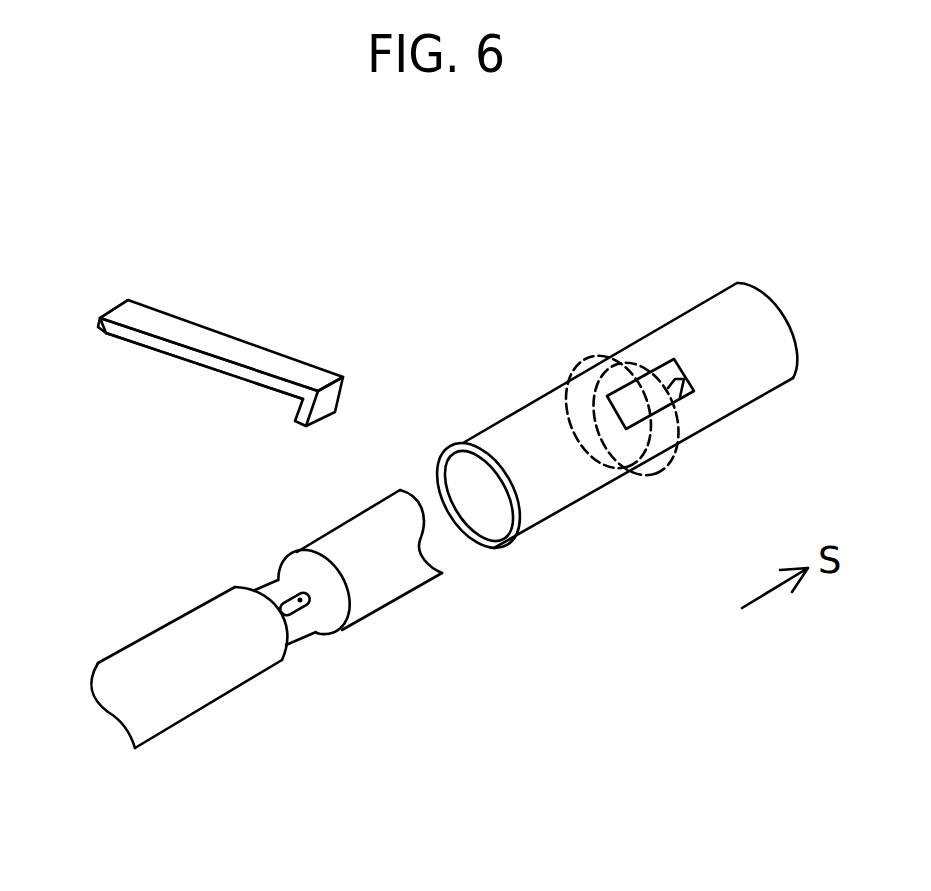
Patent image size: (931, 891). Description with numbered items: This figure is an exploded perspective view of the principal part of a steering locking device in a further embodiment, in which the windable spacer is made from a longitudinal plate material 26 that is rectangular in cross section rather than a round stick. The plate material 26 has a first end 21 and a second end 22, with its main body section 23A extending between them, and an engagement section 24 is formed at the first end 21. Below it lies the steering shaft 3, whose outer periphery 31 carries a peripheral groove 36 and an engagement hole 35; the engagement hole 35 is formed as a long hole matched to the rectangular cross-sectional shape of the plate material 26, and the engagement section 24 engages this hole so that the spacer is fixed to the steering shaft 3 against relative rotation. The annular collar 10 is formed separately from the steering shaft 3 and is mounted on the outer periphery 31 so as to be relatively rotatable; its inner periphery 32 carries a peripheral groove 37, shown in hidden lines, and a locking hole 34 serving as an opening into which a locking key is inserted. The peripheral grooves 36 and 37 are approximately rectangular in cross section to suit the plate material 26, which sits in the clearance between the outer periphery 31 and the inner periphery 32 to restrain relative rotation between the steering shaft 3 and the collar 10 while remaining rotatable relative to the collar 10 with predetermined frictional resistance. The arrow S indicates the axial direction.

The plate material 26 is at (238, 338).
The first end 21 is at (312, 377).
The second end 22 is at (132, 315).
The key bottom surface 23A is at (230, 350).
The engagement section 24 is at (337, 397).
The collar 10 is at (609, 457).
The inner periphery of collar 32 is at (473, 497).
The locking hole 34 is at (679, 398).
The peripheral groove 37 is at (655, 478).
The steering shaft 3 is at (266, 663).
The outer periphery of steering shaft 31 is at (224, 690).
The engagement hole 35 is at (297, 607).
The peripheral groove 36 is at (281, 586).